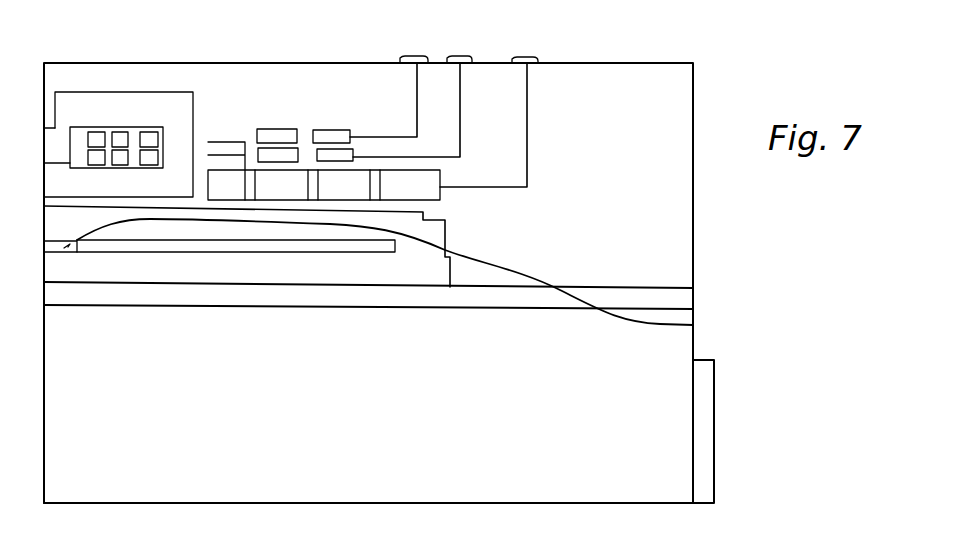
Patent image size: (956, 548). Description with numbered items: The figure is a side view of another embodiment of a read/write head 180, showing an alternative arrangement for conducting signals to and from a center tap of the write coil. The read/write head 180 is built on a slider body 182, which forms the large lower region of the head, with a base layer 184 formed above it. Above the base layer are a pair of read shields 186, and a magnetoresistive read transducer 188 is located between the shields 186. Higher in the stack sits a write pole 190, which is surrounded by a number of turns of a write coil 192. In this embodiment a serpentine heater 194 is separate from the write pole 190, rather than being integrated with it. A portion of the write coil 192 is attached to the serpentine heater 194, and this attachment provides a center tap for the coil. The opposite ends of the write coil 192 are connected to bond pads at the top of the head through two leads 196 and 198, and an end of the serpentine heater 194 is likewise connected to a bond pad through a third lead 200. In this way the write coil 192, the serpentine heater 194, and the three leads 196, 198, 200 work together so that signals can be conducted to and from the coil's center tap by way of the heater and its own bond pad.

The read/write head 180 is at (800, 265).
The slider body 182 is at (350, 402).
The base layer 184 is at (407, 298).
The read shields 186 is at (380, 275).
The magnetoresistive read transducer 188 is at (693, 325).
The write pole 190 is at (182, 130).
The write coil 192 is at (333, 137).
The serpentine heater 194 is at (400, 188).
The lead 196 is at (417, 85).
The lead 198 is at (462, 95).
The lead 200 is at (527, 103).